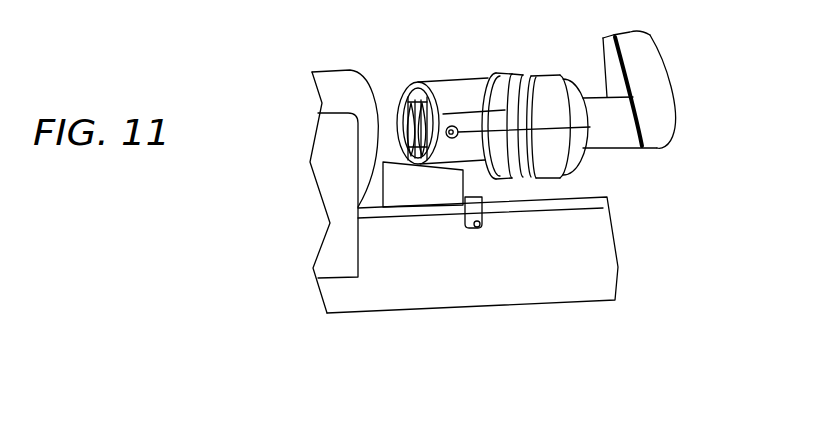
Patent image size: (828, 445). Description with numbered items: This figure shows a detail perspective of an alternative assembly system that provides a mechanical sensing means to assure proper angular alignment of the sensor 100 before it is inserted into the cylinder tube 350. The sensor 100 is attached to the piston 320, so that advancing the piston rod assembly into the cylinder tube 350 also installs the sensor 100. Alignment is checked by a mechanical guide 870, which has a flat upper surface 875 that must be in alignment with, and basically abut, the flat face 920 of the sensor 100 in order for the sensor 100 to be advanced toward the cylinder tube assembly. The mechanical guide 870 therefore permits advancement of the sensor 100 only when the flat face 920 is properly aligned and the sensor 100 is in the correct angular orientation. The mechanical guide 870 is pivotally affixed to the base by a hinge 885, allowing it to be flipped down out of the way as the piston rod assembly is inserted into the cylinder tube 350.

The sensor 100 is at (455, 52).
The piston 320 is at (528, 74).
The cylinder tube 350 is at (336, 70).
The mechanical guide 870 is at (453, 187).
The flat upper surface 875 is at (437, 163).
The hinge 885 is at (483, 228).
The flat face 920 is at (470, 164).